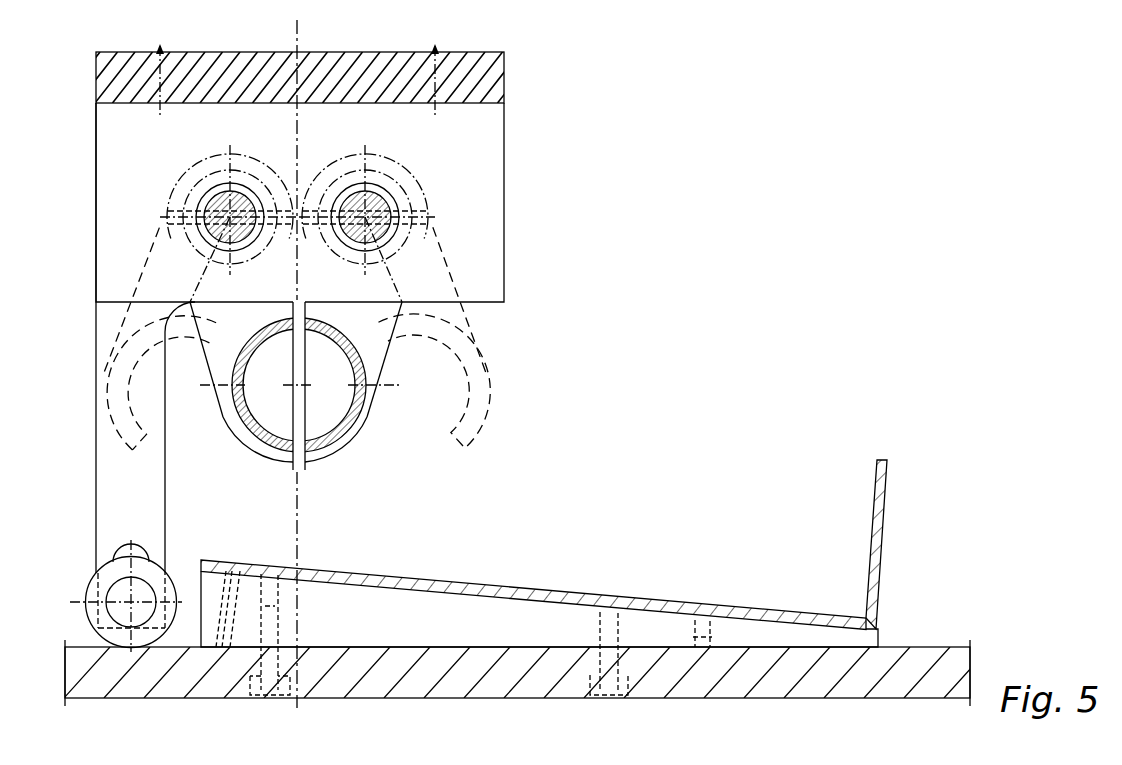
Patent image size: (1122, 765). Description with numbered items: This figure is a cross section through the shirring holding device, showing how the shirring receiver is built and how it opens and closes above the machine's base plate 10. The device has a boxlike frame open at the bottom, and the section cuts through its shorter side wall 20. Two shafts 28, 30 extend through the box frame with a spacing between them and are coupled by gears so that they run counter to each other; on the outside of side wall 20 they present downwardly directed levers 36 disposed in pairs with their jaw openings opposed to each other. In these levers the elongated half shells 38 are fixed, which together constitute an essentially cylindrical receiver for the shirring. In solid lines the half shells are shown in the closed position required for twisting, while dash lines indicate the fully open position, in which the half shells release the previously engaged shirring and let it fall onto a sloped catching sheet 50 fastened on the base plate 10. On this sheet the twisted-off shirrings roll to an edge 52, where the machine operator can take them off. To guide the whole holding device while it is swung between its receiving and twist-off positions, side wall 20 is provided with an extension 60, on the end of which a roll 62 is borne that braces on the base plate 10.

The base plate 10 is at (384, 662).
The side wall 20 is at (496, 165).
The shaft 28 is at (200, 221).
The shaft 30 is at (400, 221).
The shaft 36 is at (214, 387).
The half shells 38 is at (300, 386).
The catching sheet 50 is at (410, 590).
The edge 52 is at (881, 570).
The extension 60 is at (117, 480).
The roll 62 is at (110, 573).